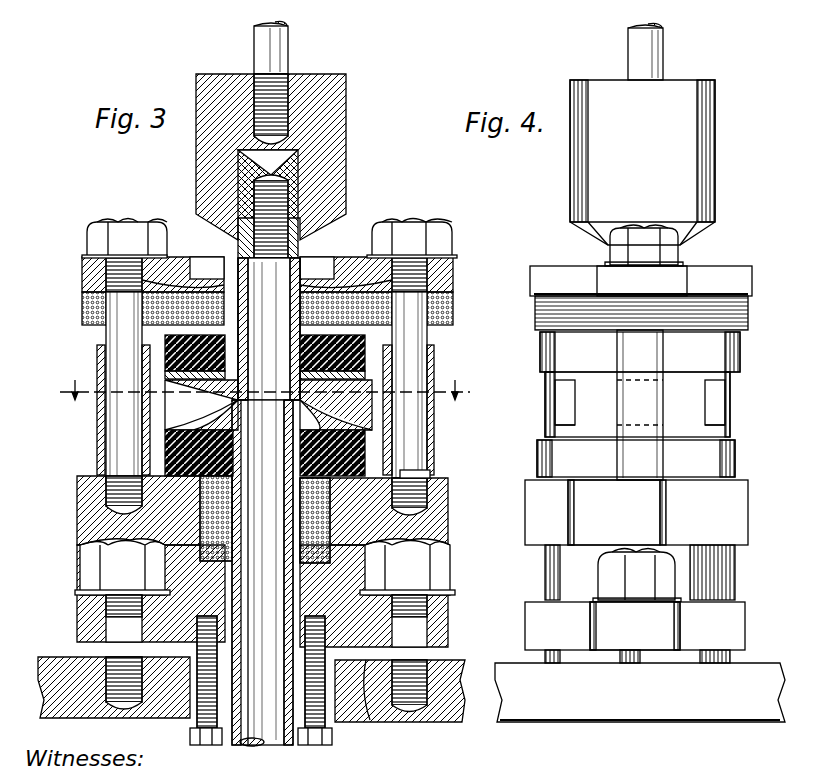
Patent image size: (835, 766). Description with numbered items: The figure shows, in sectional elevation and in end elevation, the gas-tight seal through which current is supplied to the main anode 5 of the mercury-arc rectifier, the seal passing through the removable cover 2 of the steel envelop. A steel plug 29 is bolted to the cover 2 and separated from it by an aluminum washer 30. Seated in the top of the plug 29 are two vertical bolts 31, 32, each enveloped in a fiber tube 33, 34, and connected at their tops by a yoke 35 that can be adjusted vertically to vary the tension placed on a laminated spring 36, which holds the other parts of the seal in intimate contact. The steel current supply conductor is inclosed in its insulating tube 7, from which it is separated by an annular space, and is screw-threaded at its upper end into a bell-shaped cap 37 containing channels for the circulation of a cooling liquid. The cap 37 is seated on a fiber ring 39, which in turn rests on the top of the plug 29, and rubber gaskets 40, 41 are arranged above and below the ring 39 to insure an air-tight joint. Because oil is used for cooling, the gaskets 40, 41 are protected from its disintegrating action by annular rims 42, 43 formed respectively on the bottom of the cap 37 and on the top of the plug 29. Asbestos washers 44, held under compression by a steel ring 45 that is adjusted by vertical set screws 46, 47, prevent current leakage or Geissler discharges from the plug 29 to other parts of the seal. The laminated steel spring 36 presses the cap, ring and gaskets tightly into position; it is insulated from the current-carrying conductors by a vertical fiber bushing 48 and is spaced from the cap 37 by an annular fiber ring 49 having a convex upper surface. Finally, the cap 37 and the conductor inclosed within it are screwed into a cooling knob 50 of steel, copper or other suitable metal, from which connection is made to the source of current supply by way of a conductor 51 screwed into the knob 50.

In FIG. 3, the removable cover 2 is at (450, 662).
In FIG. 4, the removable cover 2 is at (500, 665).
In FIG. 3, the main anode 5 is at (265, 391).
In FIG. 3, the insulating sleeve 7 is at (284, 740).
In FIG. 3, the steel plug 29 is at (450, 506).
In FIG. 4, the steel plug 29 is at (533, 508).
In FIG. 3, the aluminum washer 30 is at (372, 720).
In FIG. 3, the vertical bolt 31 is at (107, 338).
In FIG. 4, the vertical bolt 31 is at (628, 340).
In FIG. 3, the vertical bolt 32 is at (420, 338).
In FIG. 3, the fiber tube 33 is at (97, 433).
In FIG. 4, the fiber tube 33 is at (625, 403).
In FIG. 3, the fiber tube 34 is at (434, 425).
In FIG. 3, the yoke 35 is at (340, 268).
In FIG. 4, the yoke 35 is at (641, 281).
In FIG. 3, the laminated spring 36 is at (453, 310).
In FIG. 4, the laminated spring 36 is at (540, 318).
In FIG. 3, the bell-shaped cap 37 is at (322, 406).
In FIG. 3, the fiber ring 39 is at (428, 463).
In FIG. 3, the rubber gasket 40 is at (190, 434).
In FIG. 3, the rubber gasket 41 is at (106, 476).
In FIG. 3, the annular rim 42 is at (345, 436).
In FIG. 3, the annular rim 43 is at (455, 480).
In FIG. 4, the annular rim 43 is at (540, 458).
In FIG. 3, the asbestos washers 44 is at (200, 506).
In FIG. 3, the steel ring 45 is at (205, 576).
In FIG. 4, the steel ring 45 is at (635, 597).
In FIG. 3, the vertical set screw 46 is at (206, 745).
In FIG. 3, the vertical set screw 47 is at (312, 746).
In FIG. 3, the vertical fiber bushing 48 is at (230, 262).
In FIG. 4, the vertical fiber bushing 48 is at (644, 245).
In FIG. 3, the annular fiber ring 49 is at (165, 348).
In FIG. 3, the cooling knob 50 is at (345, 178).
In FIG. 4, the cooling knob 50 is at (578, 174).
In FIG. 3, the conductor 51 is at (286, 58).
In FIG. 4, the conductor 51 is at (630, 52).